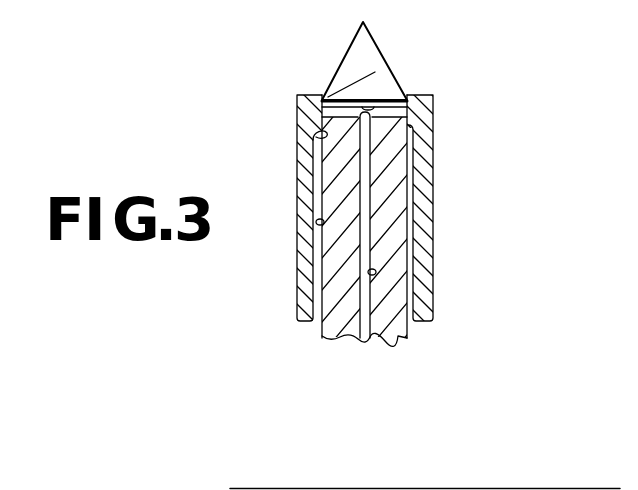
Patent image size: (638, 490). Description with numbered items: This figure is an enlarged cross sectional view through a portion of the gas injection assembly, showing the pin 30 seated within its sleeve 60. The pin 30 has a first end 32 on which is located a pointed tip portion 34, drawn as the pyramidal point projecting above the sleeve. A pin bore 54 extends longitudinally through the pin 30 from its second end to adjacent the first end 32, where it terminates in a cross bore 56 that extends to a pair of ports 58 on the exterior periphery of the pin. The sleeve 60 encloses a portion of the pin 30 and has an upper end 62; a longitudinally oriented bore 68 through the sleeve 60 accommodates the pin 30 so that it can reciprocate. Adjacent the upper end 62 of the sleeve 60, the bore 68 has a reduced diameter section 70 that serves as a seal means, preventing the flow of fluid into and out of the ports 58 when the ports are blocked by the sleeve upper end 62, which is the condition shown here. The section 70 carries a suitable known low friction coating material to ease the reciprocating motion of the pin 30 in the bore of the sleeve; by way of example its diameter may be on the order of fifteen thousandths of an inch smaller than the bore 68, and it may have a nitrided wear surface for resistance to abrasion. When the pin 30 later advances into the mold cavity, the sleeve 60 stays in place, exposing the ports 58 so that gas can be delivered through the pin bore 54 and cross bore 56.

The pin 30 is at (392, 323).
The first end 32 is at (390, 182).
The pointed tip portion 34 is at (362, 36).
The pin bore 54 is at (374, 271).
The cross bore 56 is at (360, 101).
The ports 58 is at (322, 100).
The sleeve 60 is at (300, 304).
The upper end 62 is at (427, 136).
The bore 68 is at (316, 223).
The reduced diameter section 70 is at (318, 136).